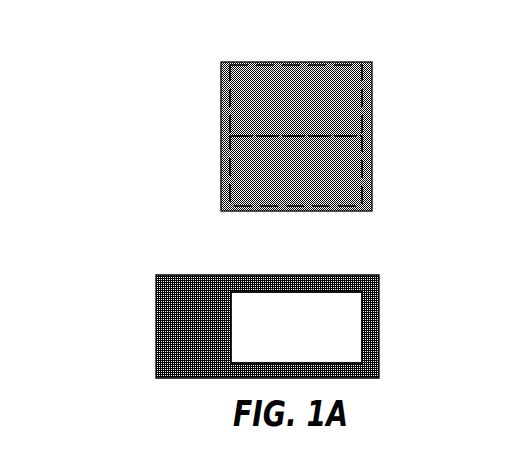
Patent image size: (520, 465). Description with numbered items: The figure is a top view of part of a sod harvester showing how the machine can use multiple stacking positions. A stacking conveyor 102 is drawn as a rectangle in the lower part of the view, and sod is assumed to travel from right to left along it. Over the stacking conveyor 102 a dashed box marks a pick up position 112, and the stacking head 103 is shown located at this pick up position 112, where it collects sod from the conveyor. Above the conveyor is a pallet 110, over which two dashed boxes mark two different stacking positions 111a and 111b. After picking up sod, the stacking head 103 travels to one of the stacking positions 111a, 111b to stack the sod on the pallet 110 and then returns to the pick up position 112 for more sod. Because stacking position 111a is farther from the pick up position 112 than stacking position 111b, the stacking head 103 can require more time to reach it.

The pallet 110 is at (221, 172).
The stacking position 111a is at (362, 93).
The stacking position 111b is at (362, 175).
The stacking conveyor 102 is at (156, 290).
The pick up position 112 is at (379, 308).
The stacking head 103 is at (343, 347).